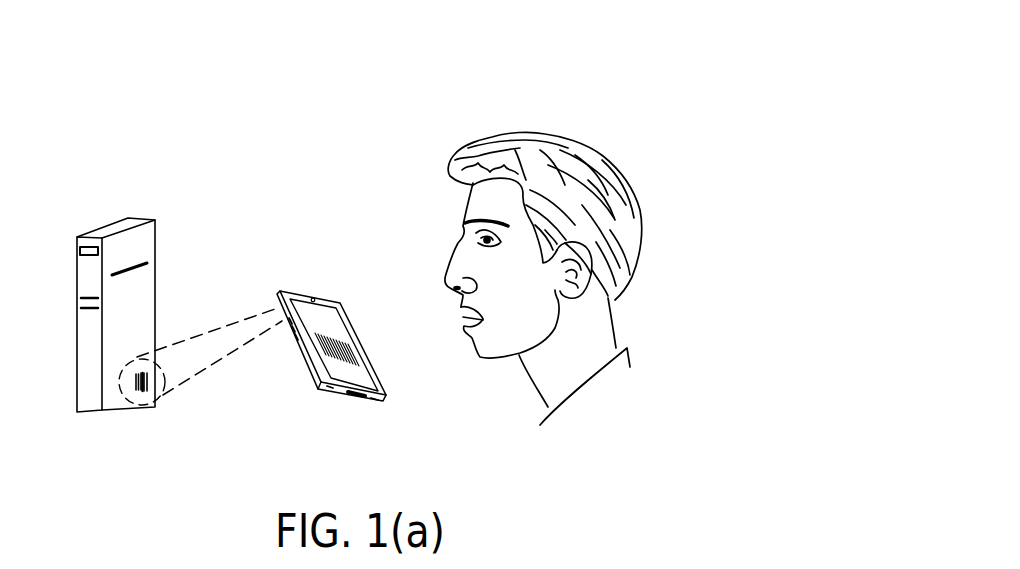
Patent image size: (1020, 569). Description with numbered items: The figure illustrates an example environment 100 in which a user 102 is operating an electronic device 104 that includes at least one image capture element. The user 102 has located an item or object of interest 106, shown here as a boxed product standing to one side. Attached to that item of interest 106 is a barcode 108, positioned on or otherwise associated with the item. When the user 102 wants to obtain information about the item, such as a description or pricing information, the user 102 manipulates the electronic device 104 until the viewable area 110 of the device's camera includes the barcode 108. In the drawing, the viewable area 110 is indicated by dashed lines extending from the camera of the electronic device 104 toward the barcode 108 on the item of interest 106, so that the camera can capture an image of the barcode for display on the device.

The environment 100 is at (742, 98).
The user 102 is at (422, 196).
The electronic device 104 is at (366, 402).
The item or object of interest 106 is at (115, 223).
The barcode 108 is at (153, 388).
The viewable area 110 is at (277, 302).